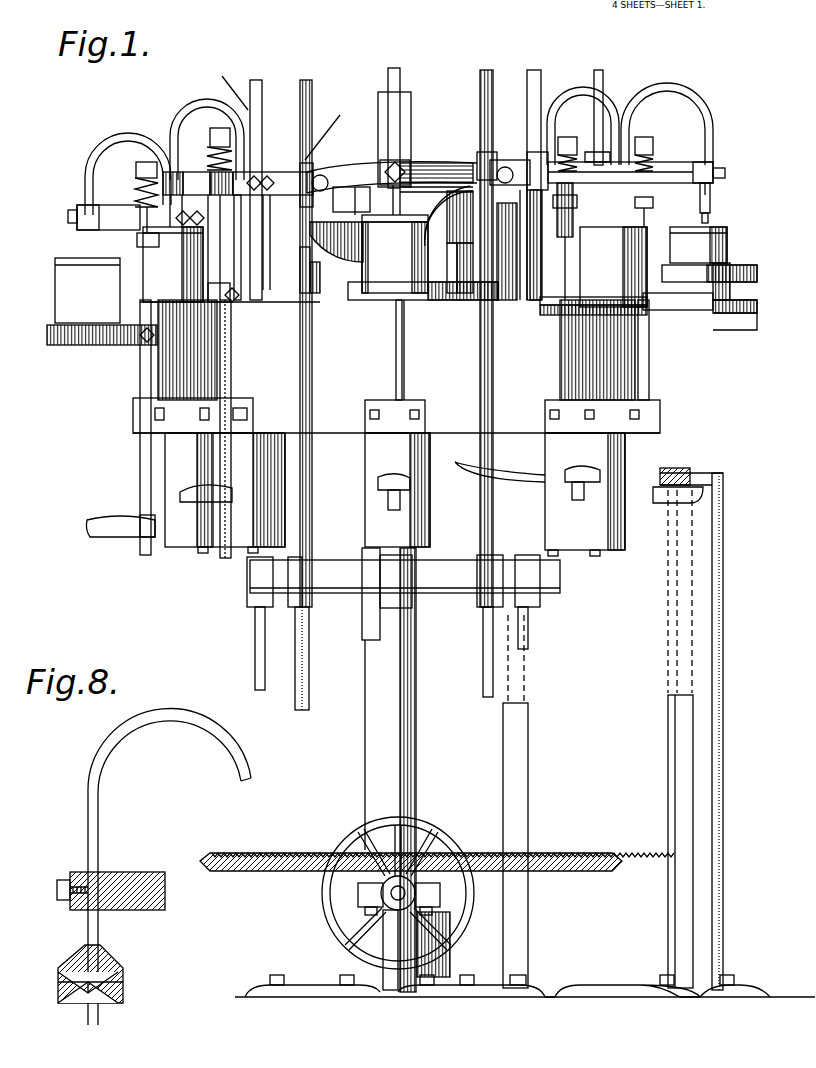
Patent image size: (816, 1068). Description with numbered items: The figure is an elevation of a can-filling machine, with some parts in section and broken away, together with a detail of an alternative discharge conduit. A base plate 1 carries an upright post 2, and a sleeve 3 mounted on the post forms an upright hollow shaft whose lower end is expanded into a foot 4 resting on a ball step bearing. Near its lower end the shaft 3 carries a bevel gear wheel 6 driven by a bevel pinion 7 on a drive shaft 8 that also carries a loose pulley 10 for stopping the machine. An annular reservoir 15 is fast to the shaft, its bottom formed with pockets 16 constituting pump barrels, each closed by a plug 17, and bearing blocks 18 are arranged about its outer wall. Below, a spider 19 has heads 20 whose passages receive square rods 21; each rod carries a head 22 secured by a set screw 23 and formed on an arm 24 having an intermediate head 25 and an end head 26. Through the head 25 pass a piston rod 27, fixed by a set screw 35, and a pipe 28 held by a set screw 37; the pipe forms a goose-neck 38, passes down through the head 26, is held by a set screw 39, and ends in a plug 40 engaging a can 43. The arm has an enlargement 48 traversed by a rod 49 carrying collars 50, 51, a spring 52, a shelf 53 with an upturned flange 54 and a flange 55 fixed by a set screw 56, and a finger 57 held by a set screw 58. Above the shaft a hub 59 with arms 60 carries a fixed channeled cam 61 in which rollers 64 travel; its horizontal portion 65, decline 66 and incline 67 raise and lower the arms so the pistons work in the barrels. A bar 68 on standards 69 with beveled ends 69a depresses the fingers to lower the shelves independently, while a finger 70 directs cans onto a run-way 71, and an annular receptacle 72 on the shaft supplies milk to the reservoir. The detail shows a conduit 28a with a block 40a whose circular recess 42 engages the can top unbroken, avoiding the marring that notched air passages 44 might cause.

In FIG. 1, the base plate 1 is at (470, 997).
In FIG. 1, the post 2 is at (394, 75).
In FIG. 1, the sleeve 3 is at (416, 727).
In FIG. 1, the foot 4 is at (350, 965).
In FIG. 1, the bevel gear wheel 6 is at (585, 866).
In FIG. 1, the bevel pinion 7 is at (375, 865).
In FIG. 1, the drive shaft 8 is at (392, 896).
In FIG. 1, the loose pulley 10 is at (455, 940).
In FIG. 1, the annular reservoir 15 is at (309, 355).
In FIG. 1, the pockets 16 is at (630, 565).
In FIG. 1, the plug 17 is at (210, 555).
In FIG. 1, the bearing blocks 18 is at (150, 410).
In FIG. 1, the spider 19 is at (405, 597).
In FIG. 1, the heads 20 is at (548, 610).
In FIG. 1, the rod 21 is at (265, 640).
In FIG. 1, the head 22 is at (322, 175).
In FIG. 1, the set screw 23 is at (351, 199).
In FIG. 1, the arm 24 is at (112, 230).
In FIG. 8, the arm 24 is at (142, 870).
In FIG. 1, the head or enlargement 25 is at (270, 172).
In FIG. 1, the head 26 is at (80, 225).
In FIG. 1, the piston rod 27 is at (256, 82).
In FIG. 1, the pipe or conduit 28 is at (241, 268).
In FIG. 8, the conduit 28a is at (88, 805).
In FIG. 1, the set screw 35 is at (327, 129).
In FIG. 1, the set screw 37 is at (230, 87).
In FIG. 1, the goose-neck 38 is at (105, 150).
In FIG. 1, the set screw 39 is at (68, 216).
In FIG. 8, the set screw 39 is at (57, 893).
In FIG. 1, the plug 40 is at (710, 213).
In FIG. 8, the block 40a is at (110, 960).
In FIG. 8, the recess 42 is at (105, 995).
In FIG. 1, the can 43 is at (55, 300).
In FIG. 8, the passages 44 is at (58, 975).
In FIG. 1, the enlargement 48 is at (140, 222).
In FIG. 1, the rod 49 is at (231, 355).
In FIG. 1, the collar 50 is at (145, 162).
In FIG. 1, the collar 51 is at (218, 200).
In FIG. 1, the spring 52 is at (135, 188).
In FIG. 1, the shelf 53 is at (356, 350).
In FIG. 1, the upturned flange 54 is at (712, 338).
In FIG. 1, the flange 55 is at (348, 298).
In FIG. 1, the set screw 56 is at (145, 340).
In FIG. 1, the finger 57 is at (180, 490).
In FIG. 1, the set screw 58 is at (127, 549).
In FIG. 1, the hub 59 is at (388, 224).
In FIG. 1, the arms 60 is at (391, 226).
In FIG. 1, the channeled cam 61 is at (452, 250).
In FIG. 1, the roller 64 is at (345, 175).
In FIG. 1, the horizontal portion 65 is at (392, 177).
In FIG. 1, the decline 66 is at (310, 270).
In FIG. 1, the incline 67 is at (508, 251).
In FIG. 1, the bar 68 is at (690, 470).
In FIG. 1, the standards 69 is at (528, 798).
In FIG. 1, the curved or beveled ends 69a is at (460, 465).
In FIG. 1, the finger 70 is at (735, 272).
In FIG. 1, the run-way 71 is at (770, 330).
In FIG. 1, the annular receptacle 72 is at (412, 350).